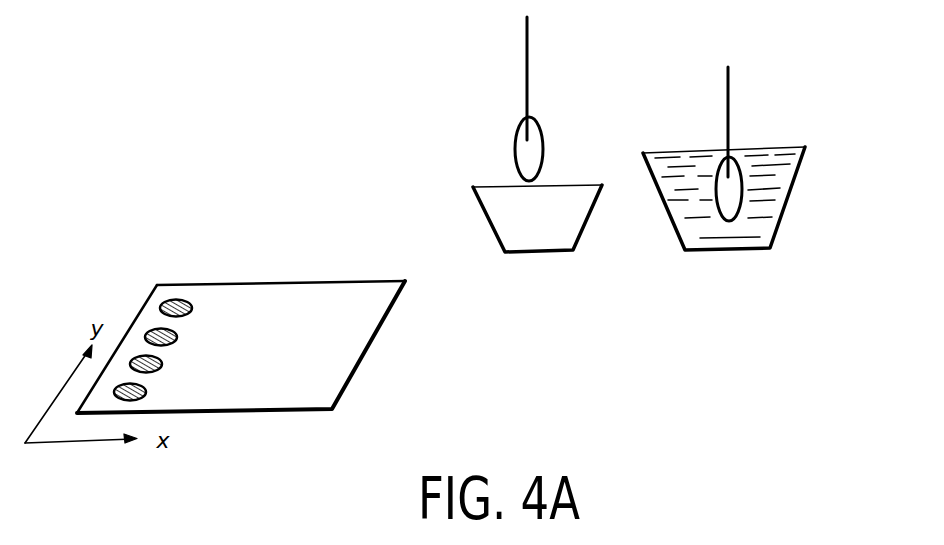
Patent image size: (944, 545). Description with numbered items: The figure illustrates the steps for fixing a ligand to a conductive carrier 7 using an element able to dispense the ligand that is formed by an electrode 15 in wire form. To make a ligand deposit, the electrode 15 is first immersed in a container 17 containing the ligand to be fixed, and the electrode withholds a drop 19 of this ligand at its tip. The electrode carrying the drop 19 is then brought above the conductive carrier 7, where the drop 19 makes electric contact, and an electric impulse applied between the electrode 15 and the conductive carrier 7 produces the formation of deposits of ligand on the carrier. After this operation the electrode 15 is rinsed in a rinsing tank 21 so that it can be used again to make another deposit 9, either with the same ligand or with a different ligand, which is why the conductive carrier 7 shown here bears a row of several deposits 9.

The conductive carrier 7 is at (257, 284).
The deposit 9 is at (172, 302).
The electrode 15 is at (527, 50).
The container 17 is at (493, 227).
The drop 19 is at (515, 145).
The rinsing tank 21 is at (788, 205).